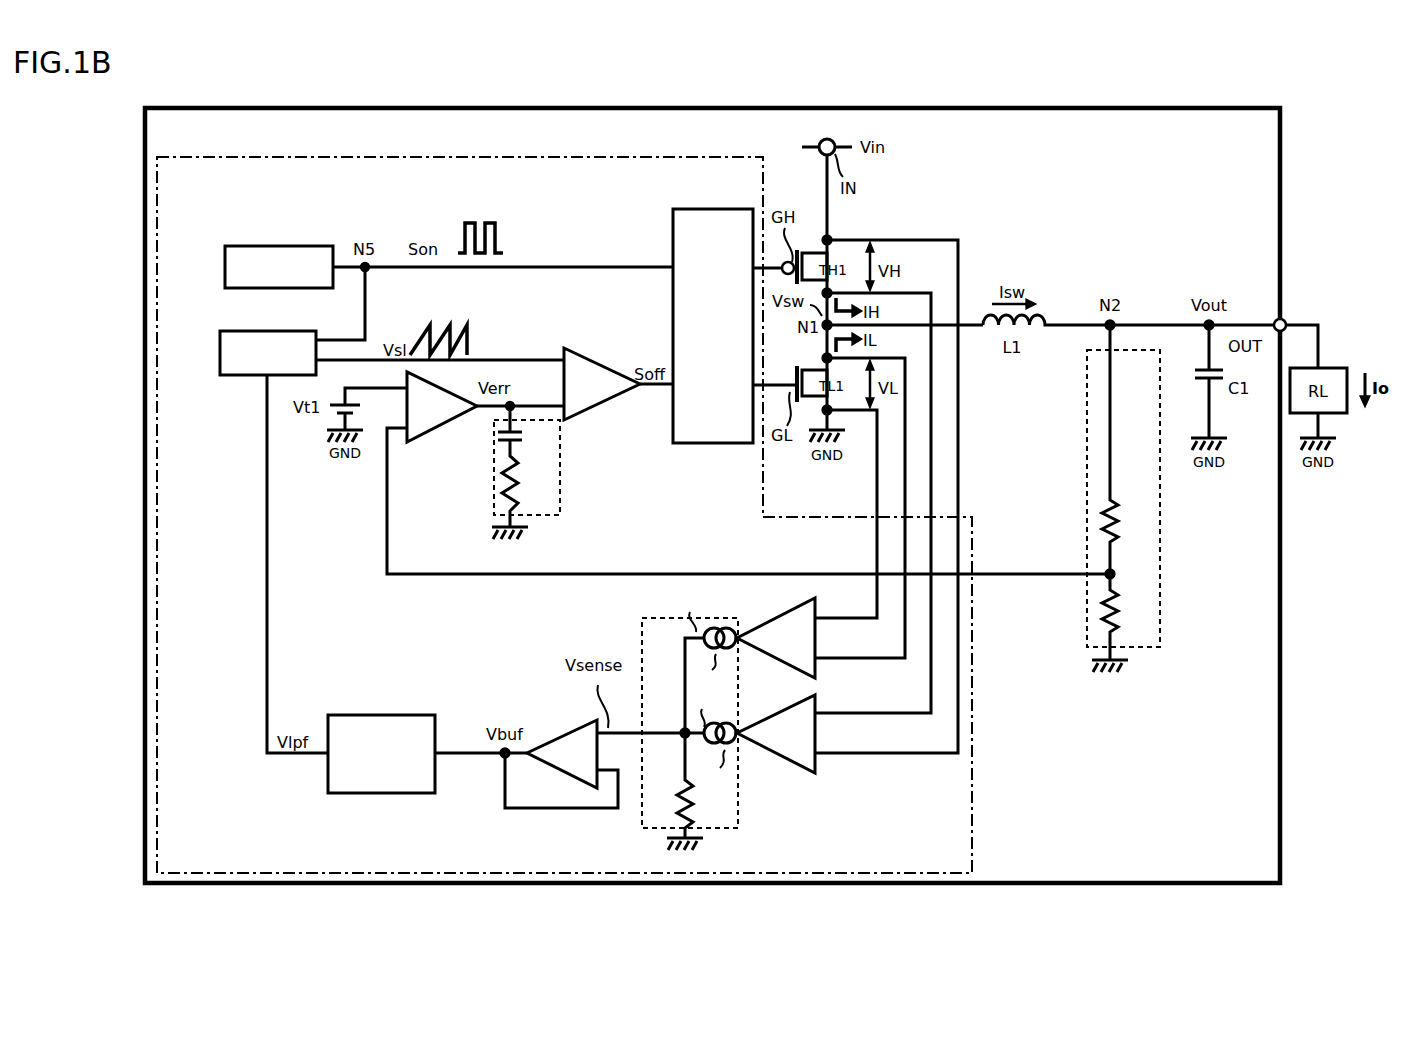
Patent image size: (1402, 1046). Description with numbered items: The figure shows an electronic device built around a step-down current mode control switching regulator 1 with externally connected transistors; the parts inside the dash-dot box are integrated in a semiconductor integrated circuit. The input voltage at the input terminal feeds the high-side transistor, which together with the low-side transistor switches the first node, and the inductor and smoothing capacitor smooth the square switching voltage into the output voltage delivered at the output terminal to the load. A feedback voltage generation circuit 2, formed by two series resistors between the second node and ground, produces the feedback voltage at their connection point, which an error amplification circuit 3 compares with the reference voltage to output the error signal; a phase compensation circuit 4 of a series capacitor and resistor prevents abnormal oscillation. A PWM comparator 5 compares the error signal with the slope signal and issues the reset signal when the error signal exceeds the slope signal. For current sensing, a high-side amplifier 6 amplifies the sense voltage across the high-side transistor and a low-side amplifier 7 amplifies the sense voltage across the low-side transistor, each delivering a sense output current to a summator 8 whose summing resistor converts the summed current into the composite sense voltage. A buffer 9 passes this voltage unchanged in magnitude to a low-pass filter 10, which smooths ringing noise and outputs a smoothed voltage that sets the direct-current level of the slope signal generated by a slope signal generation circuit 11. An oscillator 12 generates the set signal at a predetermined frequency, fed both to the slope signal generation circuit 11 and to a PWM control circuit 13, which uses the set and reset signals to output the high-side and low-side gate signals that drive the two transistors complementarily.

The current mode control switching regulator 1 is at (702, 108).
The feedback voltage generation circuit 2 is at (1160, 550).
The error amplification circuit 3 is at (430, 438).
The phase compensation circuit 4 is at (560, 487).
The PWM comparator 5 is at (600, 365).
The high-side amplifier 6 is at (768, 755).
The low-side amplifier 7 is at (764, 624).
The summator 8 is at (738, 803).
The buffer 9 is at (560, 728).
The low-pass filter 10 is at (390, 715).
The slope signal generation circuit 11 is at (296, 331).
The oscillator 12 is at (263, 246).
The PWM control circuit 13 is at (700, 209).